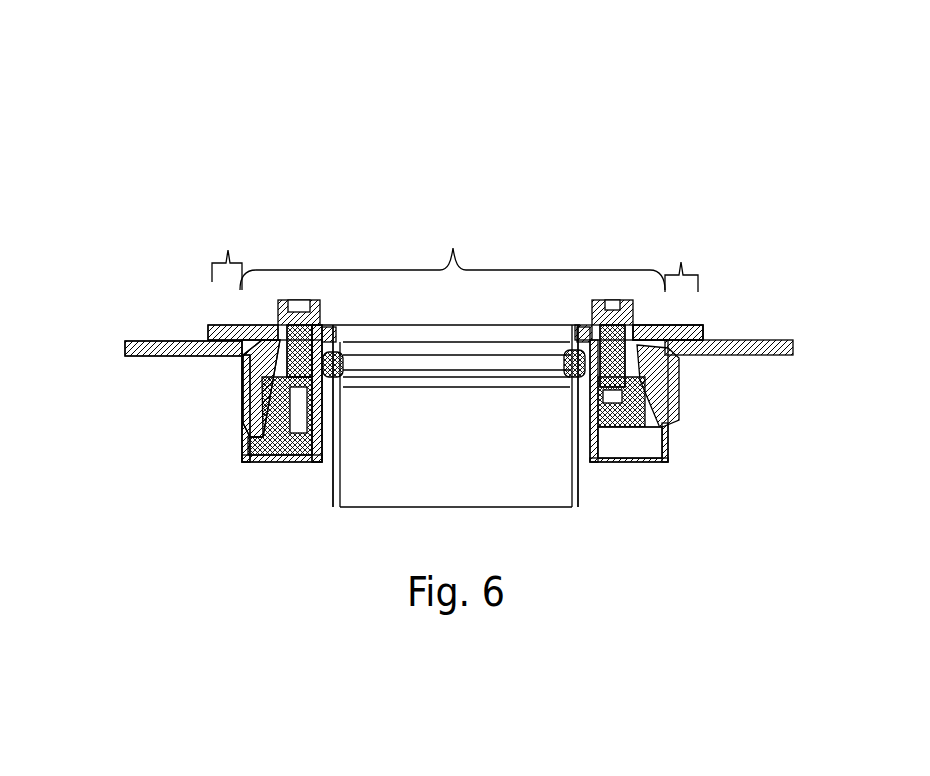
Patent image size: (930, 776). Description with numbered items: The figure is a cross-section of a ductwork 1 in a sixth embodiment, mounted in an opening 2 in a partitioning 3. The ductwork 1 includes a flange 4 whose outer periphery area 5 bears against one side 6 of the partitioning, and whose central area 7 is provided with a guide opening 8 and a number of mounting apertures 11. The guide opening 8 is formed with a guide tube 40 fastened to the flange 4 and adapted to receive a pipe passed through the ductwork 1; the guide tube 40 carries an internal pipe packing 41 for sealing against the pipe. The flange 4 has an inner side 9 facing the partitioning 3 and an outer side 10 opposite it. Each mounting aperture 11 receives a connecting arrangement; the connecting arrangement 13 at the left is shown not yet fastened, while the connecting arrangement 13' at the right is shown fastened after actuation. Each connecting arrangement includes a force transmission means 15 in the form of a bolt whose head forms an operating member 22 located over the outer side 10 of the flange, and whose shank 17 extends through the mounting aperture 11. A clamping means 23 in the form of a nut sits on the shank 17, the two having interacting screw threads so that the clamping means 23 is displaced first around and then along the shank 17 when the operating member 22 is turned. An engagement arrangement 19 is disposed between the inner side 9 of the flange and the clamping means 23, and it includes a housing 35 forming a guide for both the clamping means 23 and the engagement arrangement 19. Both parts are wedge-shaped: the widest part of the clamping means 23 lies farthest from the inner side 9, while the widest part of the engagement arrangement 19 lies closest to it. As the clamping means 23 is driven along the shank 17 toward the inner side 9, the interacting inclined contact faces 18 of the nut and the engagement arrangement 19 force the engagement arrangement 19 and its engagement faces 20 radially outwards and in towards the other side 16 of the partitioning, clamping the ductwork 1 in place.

The ductwork 1 is at (260, 148).
The opening 2 is at (436, 130).
The partitioning 3 is at (97, 352).
The flange 4 is at (200, 309).
The outer periphery area 5 is at (455, 257).
The one side of the partitioning 6 is at (773, 338).
The central area 7 is at (452, 256).
The guide opening 8 is at (512, 165).
The inner side 9 is at (203, 345).
The outer side 10 is at (702, 318).
The mounting aperture 11 is at (246, 390).
The connecting arrangement 13 is at (242, 484).
The connecting arrangement 13' is at (686, 481).
The force transmission means 15 is at (277, 462).
The other side of the partitioning 16 is at (790, 358).
The shank 17 is at (456, 356).
The contact faces 18 is at (253, 423).
The engagement arrangement 19 is at (217, 412).
The engagement faces 20 is at (705, 330).
The operating member 22 is at (282, 303).
The clamping means 23 is at (295, 462).
The housing 35 is at (322, 453).
The guide tube 40 is at (362, 462).
The pipe packing 41 is at (568, 372).